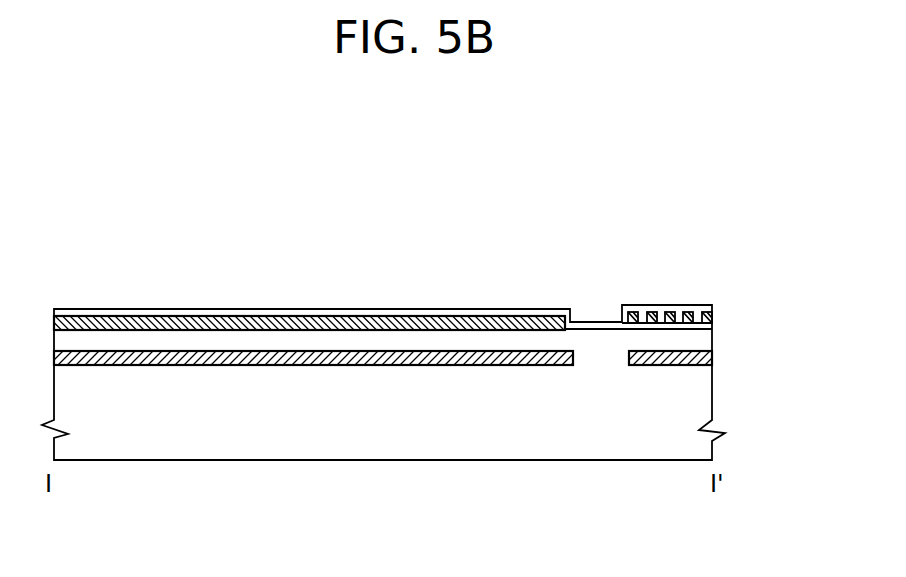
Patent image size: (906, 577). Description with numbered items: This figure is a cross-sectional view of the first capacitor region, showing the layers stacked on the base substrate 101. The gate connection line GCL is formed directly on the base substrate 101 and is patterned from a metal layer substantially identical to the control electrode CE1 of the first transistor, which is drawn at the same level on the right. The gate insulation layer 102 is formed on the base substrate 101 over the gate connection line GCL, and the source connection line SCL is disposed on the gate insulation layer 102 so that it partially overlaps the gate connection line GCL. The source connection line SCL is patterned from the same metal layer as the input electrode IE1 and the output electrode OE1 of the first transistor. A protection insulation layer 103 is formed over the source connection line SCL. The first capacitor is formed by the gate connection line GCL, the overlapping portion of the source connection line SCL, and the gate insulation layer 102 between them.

The base substrate 101 is at (363, 440).
The gate insulation layer 102 is at (707, 338).
The protection insulation layer 103 is at (707, 305).
The source connection line SCL is at (197, 323).
The gate connection line GCL is at (270, 365).
The output electrode OE1 is at (627, 322).
The input electrode IE1 is at (636, 316).
The control electrode CE1 is at (680, 356).